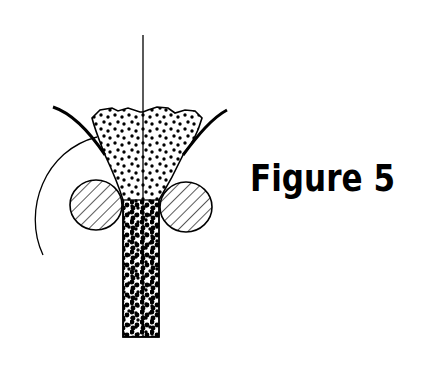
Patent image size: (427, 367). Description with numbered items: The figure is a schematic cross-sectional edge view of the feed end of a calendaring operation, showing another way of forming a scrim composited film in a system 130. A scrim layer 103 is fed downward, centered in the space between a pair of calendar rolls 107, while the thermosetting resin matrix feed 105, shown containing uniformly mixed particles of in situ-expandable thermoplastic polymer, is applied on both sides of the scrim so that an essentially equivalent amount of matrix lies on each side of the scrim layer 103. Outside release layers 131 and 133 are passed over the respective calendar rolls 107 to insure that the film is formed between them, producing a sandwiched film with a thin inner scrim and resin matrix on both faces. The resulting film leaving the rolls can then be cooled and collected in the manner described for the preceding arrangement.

The scrim layer 103 is at (143, 70).
The porous stippled body portion (lobes) 105 is at (107, 110).
The calendar rolls 107 is at (160, 231).
The system 130 is at (262, 120).
The outside release layer 131 is at (60, 217).
The outside release layer 133 is at (160, 298).